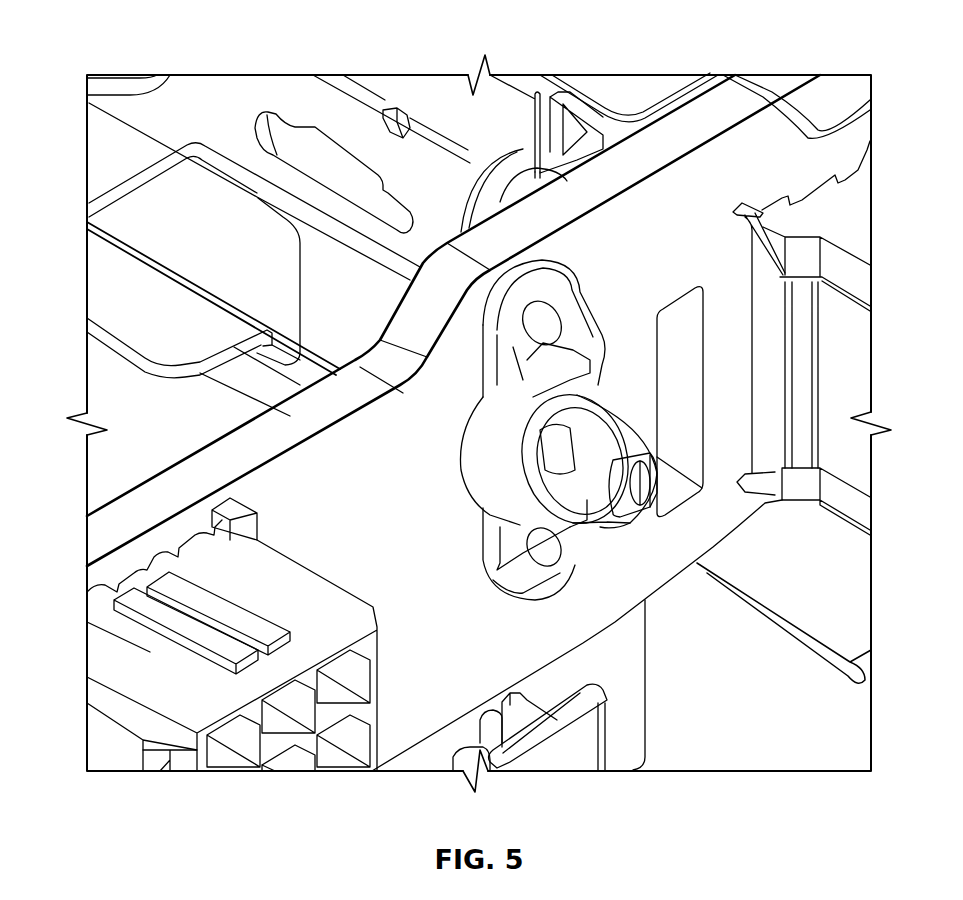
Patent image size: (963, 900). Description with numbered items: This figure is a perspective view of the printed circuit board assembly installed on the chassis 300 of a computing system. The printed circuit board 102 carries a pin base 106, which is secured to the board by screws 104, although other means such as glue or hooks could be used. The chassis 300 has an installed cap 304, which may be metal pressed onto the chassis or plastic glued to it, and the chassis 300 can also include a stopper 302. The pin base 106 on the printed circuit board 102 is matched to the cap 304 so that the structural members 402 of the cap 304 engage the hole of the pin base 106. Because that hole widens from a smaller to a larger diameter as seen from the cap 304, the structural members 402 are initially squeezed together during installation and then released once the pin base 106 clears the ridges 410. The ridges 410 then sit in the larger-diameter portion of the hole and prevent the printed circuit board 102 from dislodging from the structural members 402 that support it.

The printed circuit board 102 is at (120, 517).
The screws 104 is at (553, 317).
The pin base 106 is at (437, 481).
The chassis 300 is at (580, 159).
The stopper 302 is at (545, 190).
The cap 304 is at (615, 538).
The structural members 402 is at (668, 504).
The ridges 410 is at (537, 458).